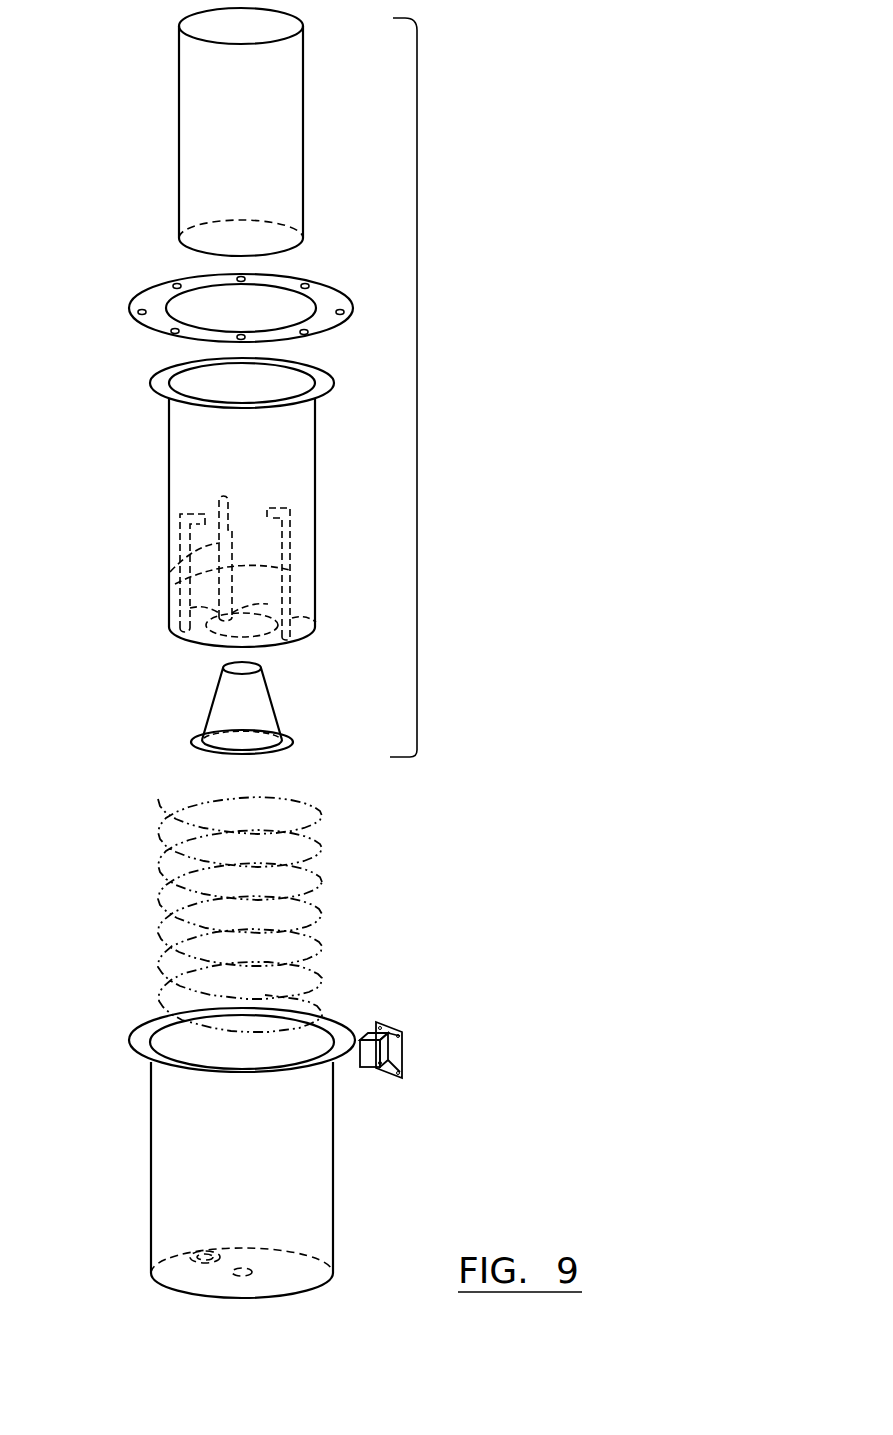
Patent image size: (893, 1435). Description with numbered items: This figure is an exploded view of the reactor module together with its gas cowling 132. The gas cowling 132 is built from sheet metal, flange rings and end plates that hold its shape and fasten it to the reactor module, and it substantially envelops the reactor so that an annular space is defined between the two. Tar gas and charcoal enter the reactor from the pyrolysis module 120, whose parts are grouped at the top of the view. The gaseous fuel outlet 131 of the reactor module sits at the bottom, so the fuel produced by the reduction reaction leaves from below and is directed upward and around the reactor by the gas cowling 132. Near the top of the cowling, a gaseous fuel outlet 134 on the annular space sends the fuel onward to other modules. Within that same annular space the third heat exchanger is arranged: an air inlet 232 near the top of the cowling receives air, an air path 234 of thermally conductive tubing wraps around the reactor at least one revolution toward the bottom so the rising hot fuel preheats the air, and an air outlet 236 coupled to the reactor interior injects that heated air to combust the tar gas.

The pyrolysis module 120 is at (417, 383).
The gaseous fuel outlet of the reactor module 131 is at (192, 742).
The gas cowling 132 is at (334, 1182).
The gaseous fuel outlet of the gas cowling 134 is at (403, 1047).
The air inlet 232 is at (126, 789).
The air path 234 is at (158, 886).
The air outlet 236 is at (200, 586).